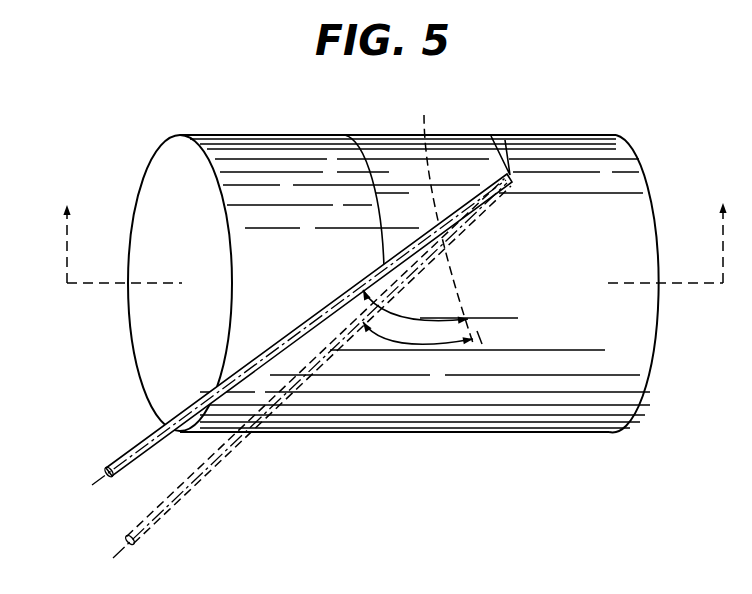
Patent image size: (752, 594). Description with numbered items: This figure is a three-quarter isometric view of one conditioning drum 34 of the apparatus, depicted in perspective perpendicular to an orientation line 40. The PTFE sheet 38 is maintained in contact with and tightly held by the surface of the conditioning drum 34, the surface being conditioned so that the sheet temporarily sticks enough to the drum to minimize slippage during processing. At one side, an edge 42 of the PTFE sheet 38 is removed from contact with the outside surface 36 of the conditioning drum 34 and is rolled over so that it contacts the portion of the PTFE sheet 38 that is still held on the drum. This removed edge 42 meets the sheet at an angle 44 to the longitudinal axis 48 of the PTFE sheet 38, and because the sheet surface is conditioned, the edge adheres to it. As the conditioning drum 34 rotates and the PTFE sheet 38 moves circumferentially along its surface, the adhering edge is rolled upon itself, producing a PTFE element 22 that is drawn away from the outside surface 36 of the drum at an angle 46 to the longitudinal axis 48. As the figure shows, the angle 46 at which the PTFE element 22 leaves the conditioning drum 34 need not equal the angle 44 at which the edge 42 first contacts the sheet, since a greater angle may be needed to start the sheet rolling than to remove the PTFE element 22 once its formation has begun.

The PTFE element 22 is at (113, 454).
The conditioning drum 34 is at (160, 168).
The outside surface 36 is at (598, 399).
The PTFE sheet 38 is at (373, 157).
The orientation line 40 is at (390, 227).
The edge 42 is at (506, 153).
The angle 44 is at (464, 312).
The angle 46 is at (476, 330).
The longitudinal axis 48 is at (432, 93).